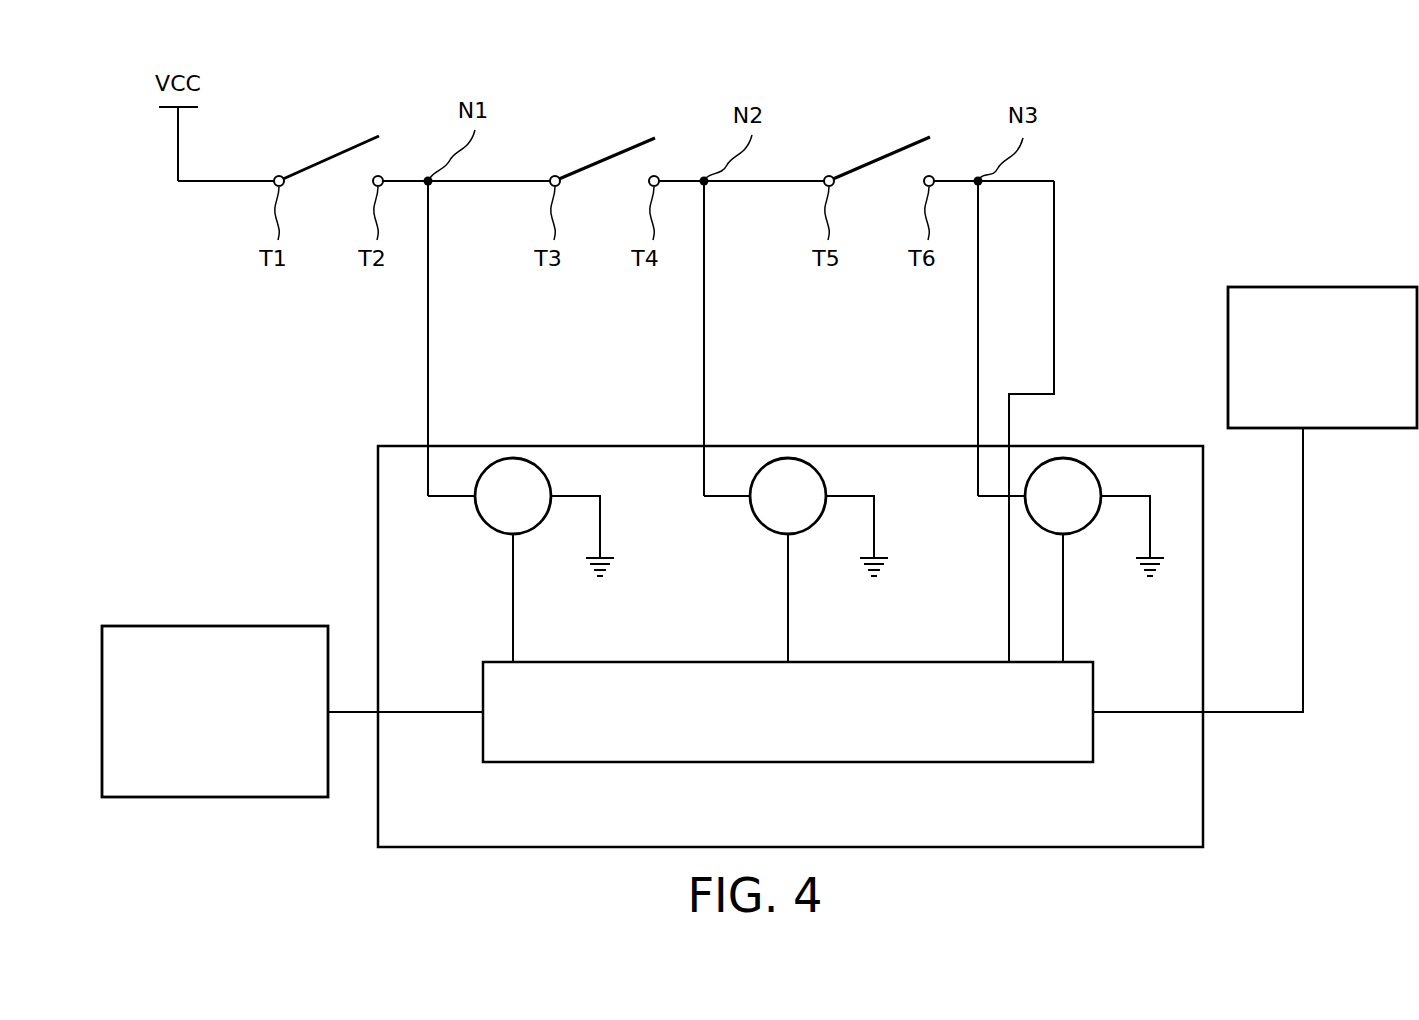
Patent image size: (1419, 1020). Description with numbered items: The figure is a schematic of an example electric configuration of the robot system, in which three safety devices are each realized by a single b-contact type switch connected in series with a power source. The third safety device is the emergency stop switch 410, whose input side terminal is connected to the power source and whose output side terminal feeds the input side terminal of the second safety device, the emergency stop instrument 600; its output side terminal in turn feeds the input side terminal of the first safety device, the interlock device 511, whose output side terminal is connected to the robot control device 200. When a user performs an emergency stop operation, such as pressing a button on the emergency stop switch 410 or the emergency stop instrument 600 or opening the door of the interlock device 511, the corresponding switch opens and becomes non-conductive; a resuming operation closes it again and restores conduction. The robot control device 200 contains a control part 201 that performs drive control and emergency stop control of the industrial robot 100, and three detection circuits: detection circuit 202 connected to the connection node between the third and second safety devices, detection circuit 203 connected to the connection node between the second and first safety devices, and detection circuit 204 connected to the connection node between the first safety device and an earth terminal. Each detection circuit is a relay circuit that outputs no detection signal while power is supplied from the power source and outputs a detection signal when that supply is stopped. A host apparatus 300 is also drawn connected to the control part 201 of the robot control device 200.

The industrial robot 100 is at (1280, 287).
The robot control device 200 is at (1203, 803).
The control part 201 is at (677, 662).
The detection circuit 202 is at (532, 460).
The detection circuit 203 is at (806, 460).
The detection circuit 204 is at (1078, 458).
The host apparatus 300 is at (213, 626).
The emergency stop switch 410 is at (327, 136).
The interlock device 511 is at (870, 142).
The emergency stop instrument 600 is at (602, 142).